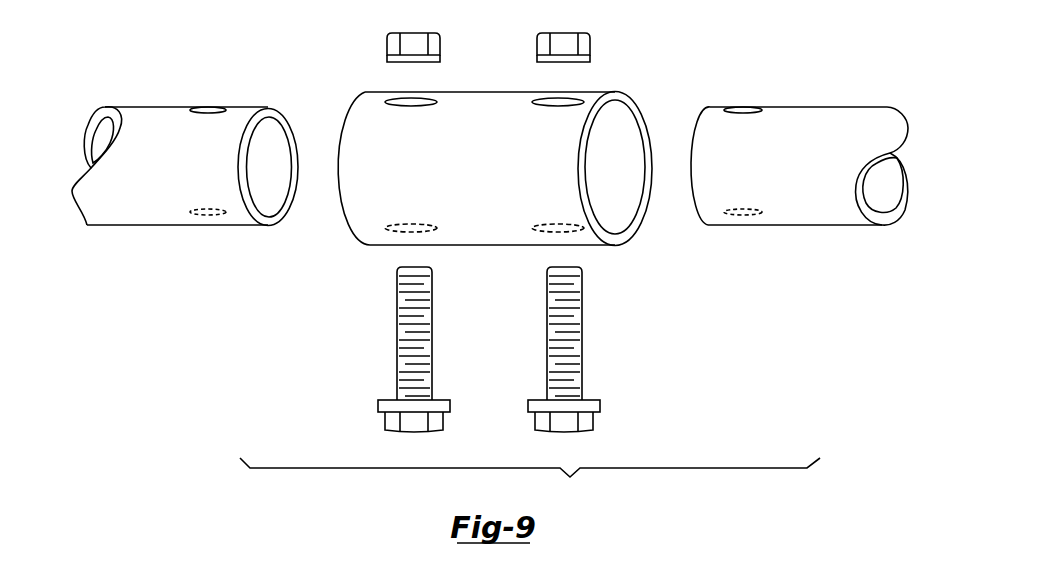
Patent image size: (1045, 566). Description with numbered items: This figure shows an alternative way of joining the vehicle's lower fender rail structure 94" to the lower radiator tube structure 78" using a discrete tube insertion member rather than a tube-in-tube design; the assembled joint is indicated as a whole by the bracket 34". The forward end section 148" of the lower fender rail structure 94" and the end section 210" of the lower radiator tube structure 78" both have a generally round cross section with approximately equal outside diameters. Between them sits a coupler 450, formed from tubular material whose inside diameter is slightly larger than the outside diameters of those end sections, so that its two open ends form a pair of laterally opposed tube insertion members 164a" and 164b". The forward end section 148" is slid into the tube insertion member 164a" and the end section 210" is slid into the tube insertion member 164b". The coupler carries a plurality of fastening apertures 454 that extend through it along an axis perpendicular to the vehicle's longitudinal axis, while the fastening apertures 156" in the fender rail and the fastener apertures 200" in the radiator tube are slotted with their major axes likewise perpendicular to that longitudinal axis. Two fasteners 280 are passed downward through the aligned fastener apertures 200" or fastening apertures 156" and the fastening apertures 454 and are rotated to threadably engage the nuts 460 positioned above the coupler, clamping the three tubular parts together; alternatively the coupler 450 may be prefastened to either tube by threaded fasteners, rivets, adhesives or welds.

The clamp assembly 34 is at (530, 483).
The lower radiator tube structure 78 is at (868, 249).
The lower fender rail structure 94 is at (85, 125).
The forward end section 148 is at (122, 210).
The fastening apertures 156 is at (203, 115).
The tube insertion member 164a is at (333, 208).
The tube insertion member 164b is at (610, 181).
The fastener apertures 200 is at (745, 113).
The end section 210 is at (776, 218).
The fasteners 280 is at (400, 377).
The coupler 450 is at (652, 94).
The fastening apertures 454 is at (412, 106).
The nuts 460 is at (540, 43).